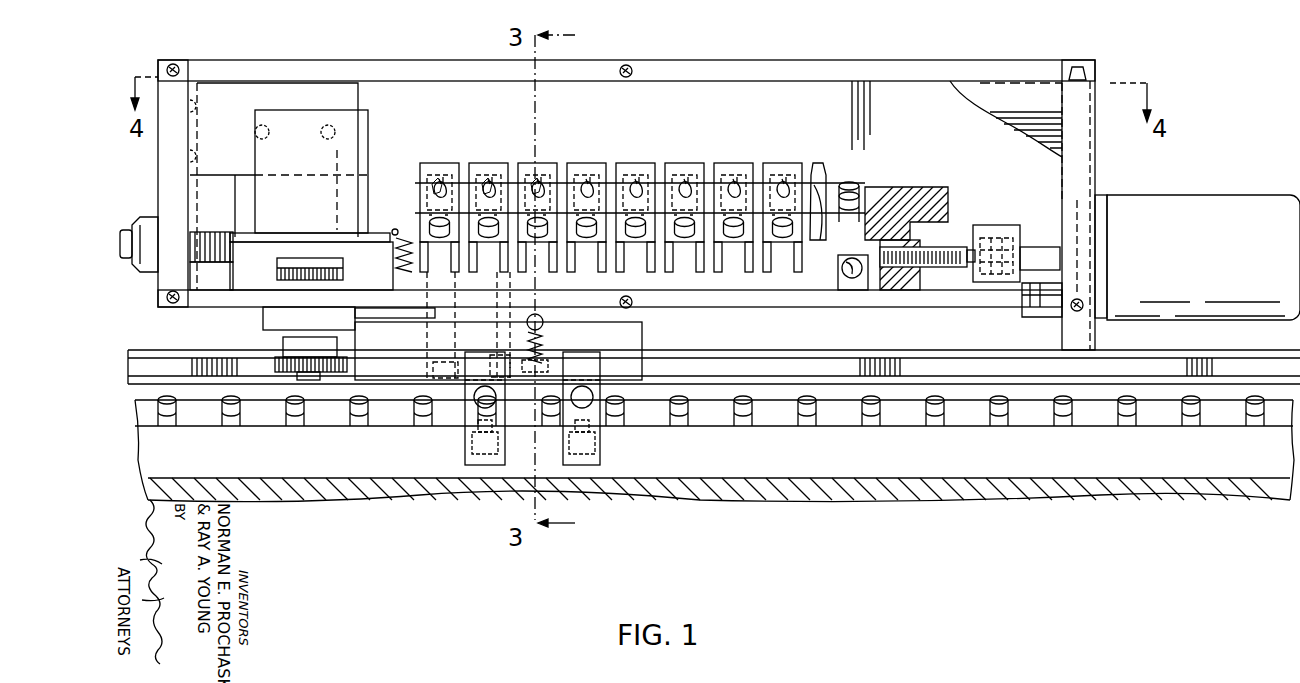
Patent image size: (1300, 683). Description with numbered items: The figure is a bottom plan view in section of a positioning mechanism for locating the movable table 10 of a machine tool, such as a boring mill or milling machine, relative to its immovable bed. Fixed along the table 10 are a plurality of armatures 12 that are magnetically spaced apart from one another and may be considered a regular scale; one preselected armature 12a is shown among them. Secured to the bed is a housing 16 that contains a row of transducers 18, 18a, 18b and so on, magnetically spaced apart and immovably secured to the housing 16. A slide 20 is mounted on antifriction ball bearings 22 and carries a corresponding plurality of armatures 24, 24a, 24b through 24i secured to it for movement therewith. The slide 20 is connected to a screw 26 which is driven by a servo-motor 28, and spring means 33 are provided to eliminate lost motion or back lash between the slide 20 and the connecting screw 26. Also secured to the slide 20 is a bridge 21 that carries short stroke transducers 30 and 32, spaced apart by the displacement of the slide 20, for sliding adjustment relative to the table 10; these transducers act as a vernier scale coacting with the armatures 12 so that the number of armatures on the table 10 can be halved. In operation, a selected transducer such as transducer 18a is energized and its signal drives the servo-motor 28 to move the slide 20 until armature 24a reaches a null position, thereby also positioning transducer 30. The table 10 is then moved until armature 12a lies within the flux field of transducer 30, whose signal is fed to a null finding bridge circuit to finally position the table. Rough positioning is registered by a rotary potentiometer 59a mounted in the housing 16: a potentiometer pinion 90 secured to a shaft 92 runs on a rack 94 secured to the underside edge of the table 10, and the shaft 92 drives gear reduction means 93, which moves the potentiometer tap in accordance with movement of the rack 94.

The table 10 is at (372, 492).
The armatures 12 is at (231, 420).
The armature 12a is at (470, 422).
The housing 16 is at (188, 307).
The transducer 18 is at (437, 165).
The transducer 18a is at (500, 163).
The transducer 18b is at (550, 163).
The slide 20 is at (918, 187).
The bridge 21 is at (625, 372).
The ball bearings 22 is at (852, 290).
The armatures 24 is at (430, 176).
The armature 24a is at (478, 180).
The armature 24b is at (527, 180).
The armature 24i is at (843, 183).
The screw 26 is at (947, 250).
The servo-motor 28 is at (1248, 207).
The short stroke transducer 30 is at (465, 456).
The transducer 32 is at (600, 458).
The spring means 33 is at (400, 240).
The rotary potentiometer 59a is at (288, 108).
The potentiometer pinion 90 is at (278, 362).
The shaft 92 is at (312, 380).
The gear reduction means 93 is at (264, 274).
The rack 94 is at (218, 362).